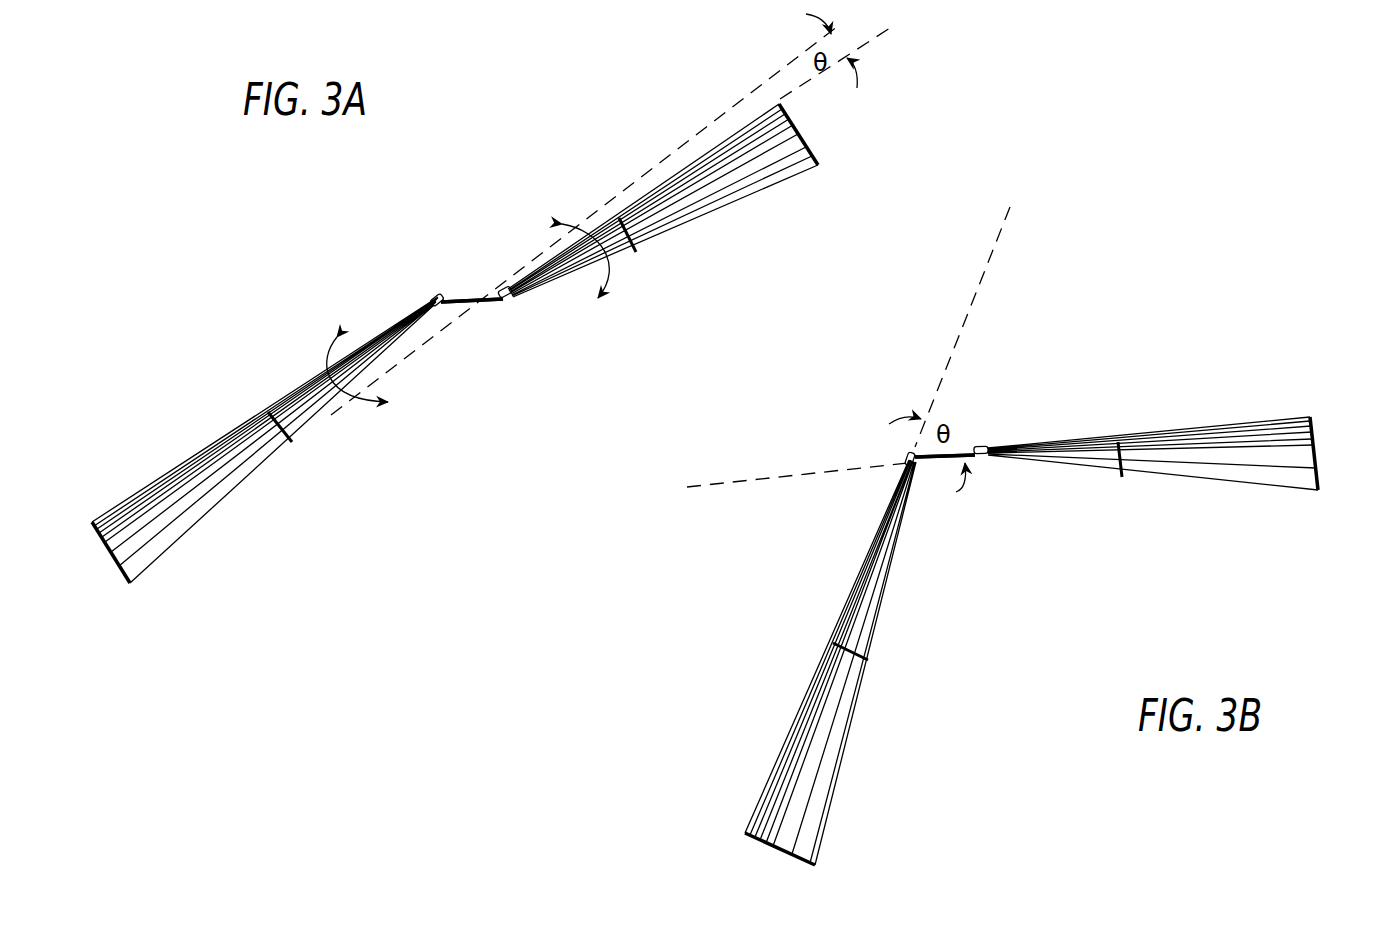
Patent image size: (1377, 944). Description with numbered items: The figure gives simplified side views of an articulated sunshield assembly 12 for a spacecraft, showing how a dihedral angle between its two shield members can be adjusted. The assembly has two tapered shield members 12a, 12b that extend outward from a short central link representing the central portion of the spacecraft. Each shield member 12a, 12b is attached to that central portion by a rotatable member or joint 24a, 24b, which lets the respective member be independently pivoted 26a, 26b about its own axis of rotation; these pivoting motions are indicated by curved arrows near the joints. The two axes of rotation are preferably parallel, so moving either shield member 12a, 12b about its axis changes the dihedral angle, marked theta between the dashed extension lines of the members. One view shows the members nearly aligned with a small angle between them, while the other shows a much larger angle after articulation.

In FIG. 3A, the sunshield assembly 12 is at (392, 293).
In FIG. 3B, the sunshield assembly 12 is at (1125, 376).
In FIG. 3A, the shield member 12a is at (709, 223).
In FIG. 3B, the shield member 12a is at (1229, 489).
In FIG. 3A, the shield member 12b is at (237, 498).
In FIG. 3B, the shield member 12b is at (851, 741).
In FIG. 3A, the rotatable member or joint 24a is at (501, 286).
In FIG. 3A, the rotatable member or joint 24b is at (438, 293).
In FIG. 3A, the pivoting of first shield member 26a is at (612, 278).
In FIG. 3A, the pivoting of second shield member 26b is at (330, 349).